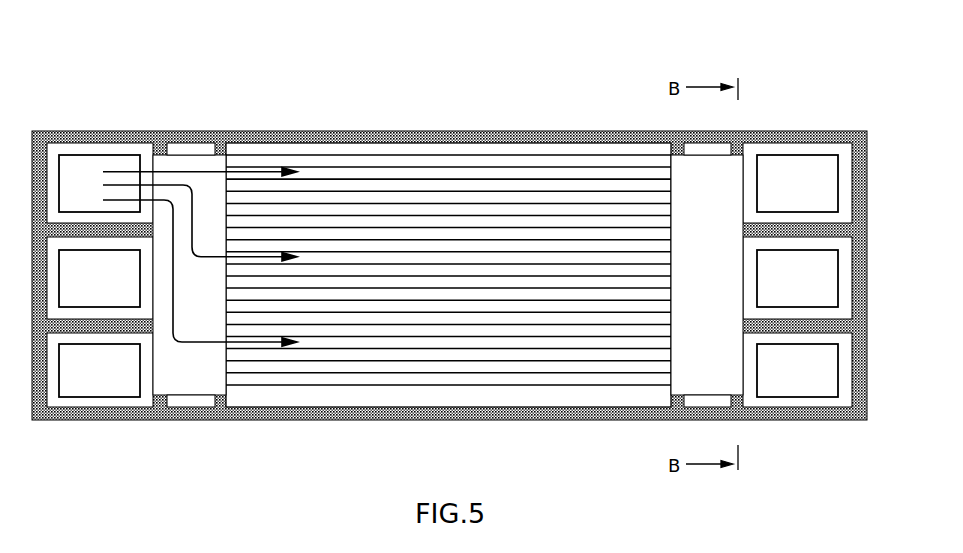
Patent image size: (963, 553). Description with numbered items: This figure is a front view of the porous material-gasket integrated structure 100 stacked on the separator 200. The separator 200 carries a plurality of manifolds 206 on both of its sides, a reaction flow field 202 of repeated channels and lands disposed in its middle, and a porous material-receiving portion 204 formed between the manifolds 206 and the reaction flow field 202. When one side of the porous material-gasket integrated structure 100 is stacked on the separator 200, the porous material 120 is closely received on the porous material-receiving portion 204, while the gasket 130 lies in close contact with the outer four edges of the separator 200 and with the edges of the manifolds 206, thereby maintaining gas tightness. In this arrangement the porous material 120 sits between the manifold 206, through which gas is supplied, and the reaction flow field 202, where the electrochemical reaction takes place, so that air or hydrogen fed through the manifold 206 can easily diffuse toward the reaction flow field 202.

The porous material-gasket integrated structure 100 is at (448, 251).
The gasket 130 is at (588, 137).
The porous material 120 is at (188, 378).
The separator 200 is at (413, 155).
The reaction flow field 202 is at (498, 173).
The porous material-receiving portion 204 is at (186, 150).
The manifold 206 is at (66, 162).